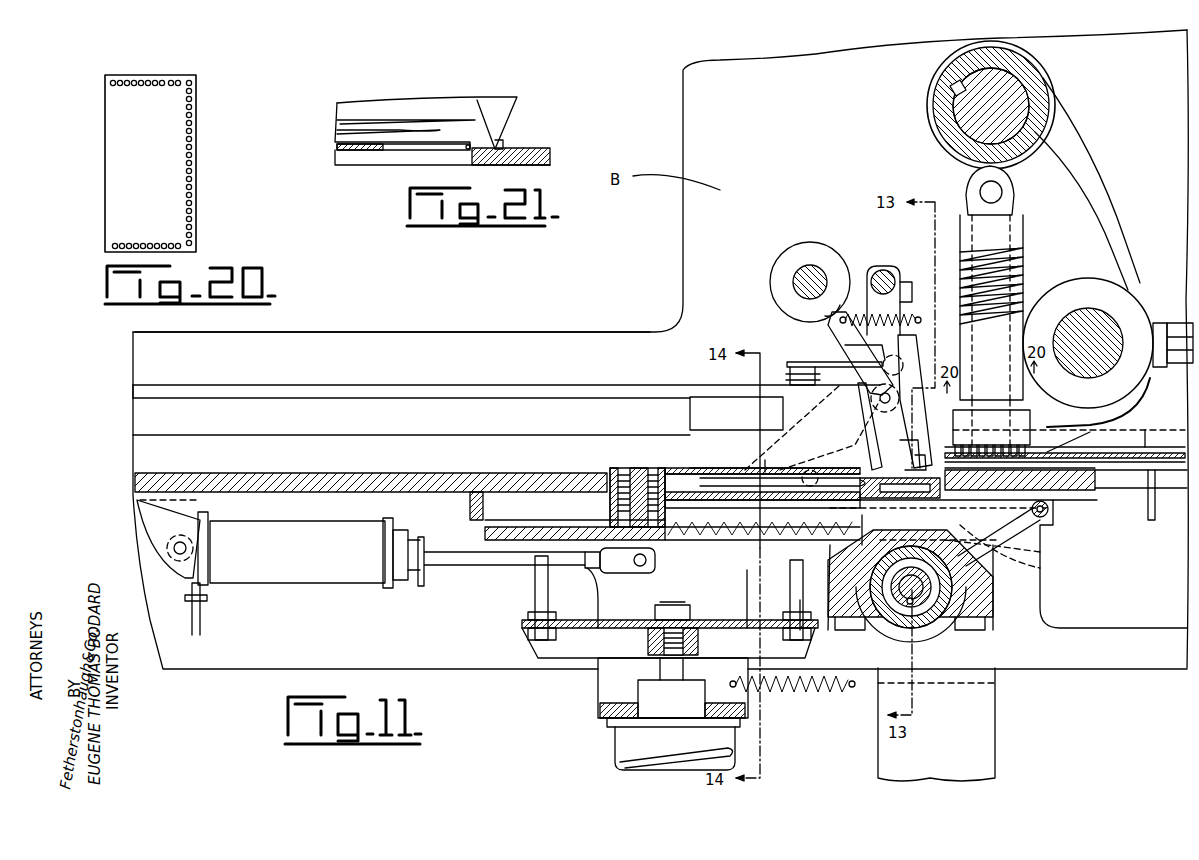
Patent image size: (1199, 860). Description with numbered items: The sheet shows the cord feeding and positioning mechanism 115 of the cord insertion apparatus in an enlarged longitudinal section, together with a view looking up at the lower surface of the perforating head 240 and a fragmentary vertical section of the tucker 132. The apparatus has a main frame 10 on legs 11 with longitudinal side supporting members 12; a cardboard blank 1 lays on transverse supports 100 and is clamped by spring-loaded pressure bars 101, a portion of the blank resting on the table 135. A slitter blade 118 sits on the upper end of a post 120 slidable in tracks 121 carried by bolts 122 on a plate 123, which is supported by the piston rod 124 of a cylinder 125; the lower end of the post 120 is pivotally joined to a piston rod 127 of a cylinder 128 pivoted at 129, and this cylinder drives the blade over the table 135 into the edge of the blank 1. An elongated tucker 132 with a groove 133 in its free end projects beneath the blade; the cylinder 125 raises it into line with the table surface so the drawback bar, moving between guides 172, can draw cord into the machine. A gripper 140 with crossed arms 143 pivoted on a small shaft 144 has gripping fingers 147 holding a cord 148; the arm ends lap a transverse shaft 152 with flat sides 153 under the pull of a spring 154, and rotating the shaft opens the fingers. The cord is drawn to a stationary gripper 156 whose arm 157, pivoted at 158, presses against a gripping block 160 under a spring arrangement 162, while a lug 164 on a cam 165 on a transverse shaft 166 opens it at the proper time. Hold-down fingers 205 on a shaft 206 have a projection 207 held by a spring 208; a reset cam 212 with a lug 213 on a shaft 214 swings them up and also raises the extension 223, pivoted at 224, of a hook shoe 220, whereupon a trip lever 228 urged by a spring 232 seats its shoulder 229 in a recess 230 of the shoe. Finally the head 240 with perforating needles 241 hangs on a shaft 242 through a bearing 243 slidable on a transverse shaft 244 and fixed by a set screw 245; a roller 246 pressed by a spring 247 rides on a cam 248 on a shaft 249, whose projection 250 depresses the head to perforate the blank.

In FIG. 11, the cardboard blank 1 is at (1131, 470).
In FIG. 11, the main frame 10 is at (1150, 664).
In FIG. 11, the legs 11 is at (997, 748).
In FIG. 11, the side supporting members 12 is at (1120, 668).
In FIG. 11, the transverse supports 100 is at (1170, 478).
In FIG. 11, the pressure bars 101 is at (1143, 444).
In FIG. 11, the cord feeding and positioning mechanism 115 is at (513, 403).
In FIG. 21, the slitter blade 118 is at (418, 118).
In FIG. 11, the slitter blade 118 is at (710, 470).
In FIG. 11, the post 120 is at (610, 506).
In FIG. 11, the tracks 121 is at (677, 527).
In FIG. 11, the bolts 122 is at (535, 596).
In FIG. 11, the plate 123 is at (540, 641).
In FIG. 11, the piston rod 124 is at (640, 690).
In FIG. 11, the cylinder 125 is at (625, 736).
In FIG. 11, the piston rod 127 is at (447, 565).
In FIG. 11, the cylinder 128 is at (318, 572).
In FIG. 11, the pivot mounting 129 is at (170, 548).
In FIG. 21, the tucker 132 is at (338, 133).
In FIG. 11, the tucker 132 is at (694, 472).
In FIG. 21, the groove 133 is at (468, 149).
In FIG. 11, the groove 133 is at (795, 480).
In FIG. 21, the table 135 is at (549, 148).
In FIG. 11, the table 135 is at (428, 416).
In FIG. 11, the gripper 140 is at (906, 382).
In FIG. 11, the crossed arms 143 is at (906, 298).
In FIG. 11, the shaft 144 is at (906, 362).
In FIG. 11, the gripping fingers 147 is at (905, 455).
In FIG. 21, the cord 148 is at (467, 152).
In FIG. 11, the transverse shaft 152 is at (892, 280).
In FIG. 11, the flat sides 153 is at (884, 270).
In FIG. 11, the spring 154 is at (855, 318).
In FIG. 11, the stationary gripper 156 is at (830, 326).
In FIG. 11, the arm 157 is at (845, 346).
In FIG. 11, the pivot 158 is at (880, 402).
In FIG. 21, the gripping block 160 is at (500, 137).
In FIG. 11, the gripping block 160 is at (908, 466).
In FIG. 11, the spring arrangement 162 is at (855, 372).
In FIG. 11, the lug 164 is at (790, 304).
In FIG. 11, the cam 165 is at (772, 270).
In FIG. 11, the transverse shaft 166 is at (800, 270).
In FIG. 21, the guides 172 is at (461, 100).
In FIG. 11, the guides 172 is at (248, 392).
In FIG. 11, the hold-down fingers 205 is at (783, 414).
In FIG. 11, the shaft 206 is at (765, 463).
In FIG. 11, the projection 207 is at (826, 532).
In FIG. 11, the spring 208 is at (725, 572).
In FIG. 11, the reset cam 212 is at (945, 636).
In FIG. 11, the lug 213 is at (958, 531).
In FIG. 11, the shaft 214 is at (920, 640).
In FIG. 11, the hook shoe 220 is at (1042, 568).
In FIG. 11, the extension 223 is at (1042, 553).
In FIG. 11, the pivot 224 is at (1046, 518).
In FIG. 11, the trip lever 228 is at (798, 592).
In FIG. 11, the shoulder 229 is at (880, 462).
In FIG. 11, the recess 230 is at (896, 494).
In FIG. 11, the spring 232 is at (780, 692).
In FIG. 20, the head 240 is at (122, 156).
In FIG. 11, the head 240 is at (1045, 418).
In FIG. 20, the perforating needles 241 is at (192, 162).
In FIG. 11, the perforating needles 241 is at (1086, 452).
In FIG. 11, the shaft 242 is at (1015, 282).
In FIG. 11, the bearing 243 is at (997, 343).
In FIG. 11, the shaft 244 is at (1140, 283).
In FIG. 11, the set screw 245 is at (1160, 350).
In FIG. 11, the roller 246 is at (968, 182).
In FIG. 11, the spring 247 is at (1030, 262).
In FIG. 11, the cam 248 is at (1040, 107).
In FIG. 11, the shaft 249 is at (1013, 97).
In FIG. 11, the projection 250 is at (945, 82).